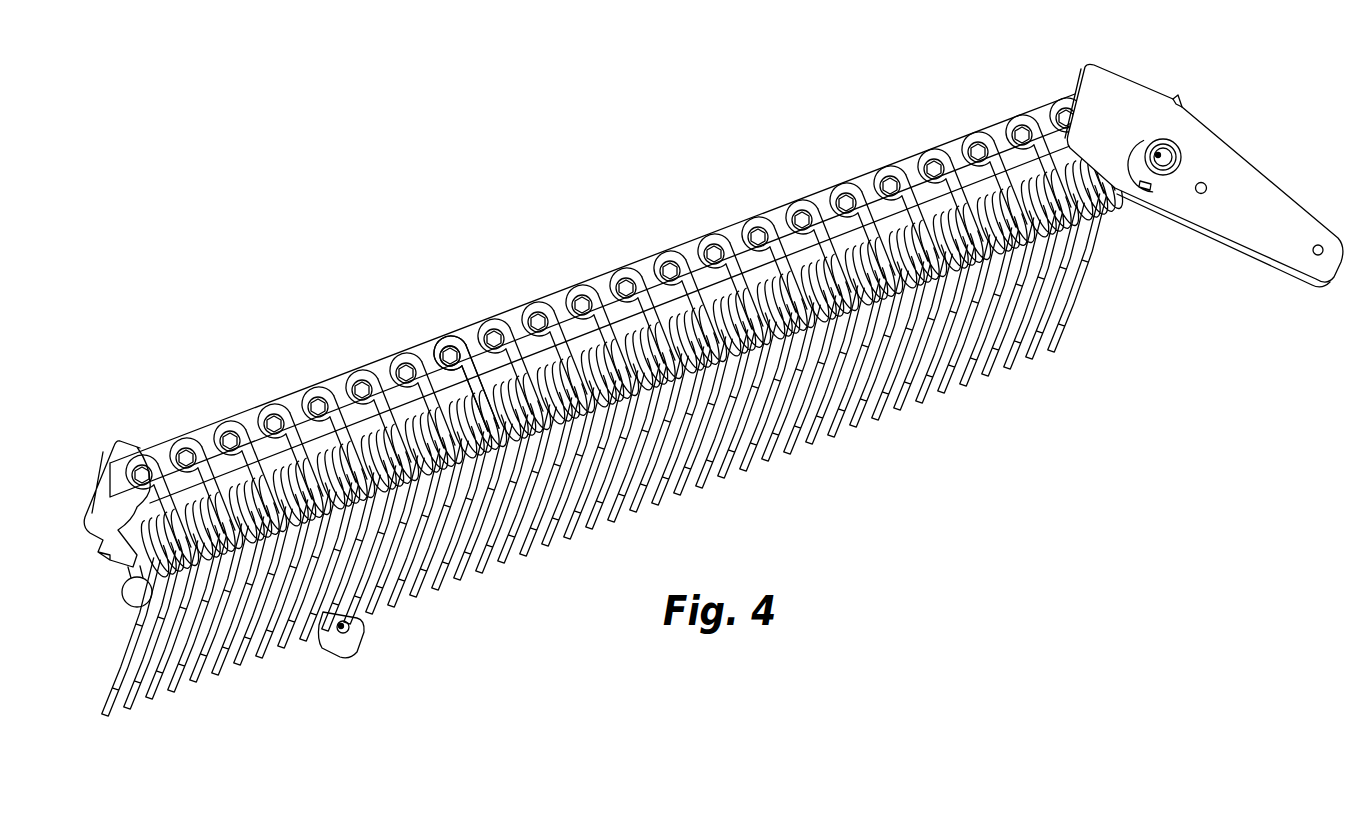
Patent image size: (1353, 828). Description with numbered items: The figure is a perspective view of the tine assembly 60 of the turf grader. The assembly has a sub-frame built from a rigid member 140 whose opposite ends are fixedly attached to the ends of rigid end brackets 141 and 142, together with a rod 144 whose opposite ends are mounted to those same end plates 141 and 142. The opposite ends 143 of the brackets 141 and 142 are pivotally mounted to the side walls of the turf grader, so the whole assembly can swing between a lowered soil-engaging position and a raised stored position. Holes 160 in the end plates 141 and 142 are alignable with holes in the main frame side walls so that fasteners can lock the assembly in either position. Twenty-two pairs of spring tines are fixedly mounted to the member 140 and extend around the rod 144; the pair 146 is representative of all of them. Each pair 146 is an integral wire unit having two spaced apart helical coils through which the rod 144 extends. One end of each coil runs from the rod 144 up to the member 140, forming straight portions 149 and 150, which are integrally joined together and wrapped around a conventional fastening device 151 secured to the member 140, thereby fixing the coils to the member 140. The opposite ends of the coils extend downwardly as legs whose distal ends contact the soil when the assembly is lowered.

The tine assembly 60 is at (449, 198).
The rigid member 140 is at (607, 274).
The end bracket 141 is at (122, 580).
The end bracket 142 is at (1120, 103).
The opposite ends of brackets 143 is at (1273, 225).
The rod 144 is at (97, 517).
The pair of tines 146 is at (467, 337).
The straight portion 149 is at (450, 375).
The straight portion 150 is at (478, 357).
The fastening device 151 is at (448, 340).
The holes 160 is at (1207, 185).